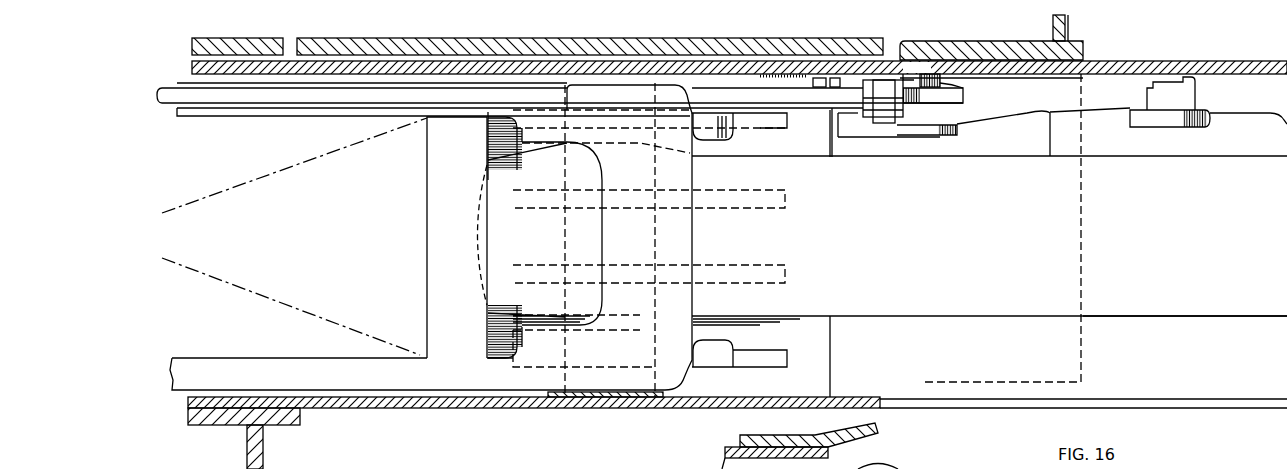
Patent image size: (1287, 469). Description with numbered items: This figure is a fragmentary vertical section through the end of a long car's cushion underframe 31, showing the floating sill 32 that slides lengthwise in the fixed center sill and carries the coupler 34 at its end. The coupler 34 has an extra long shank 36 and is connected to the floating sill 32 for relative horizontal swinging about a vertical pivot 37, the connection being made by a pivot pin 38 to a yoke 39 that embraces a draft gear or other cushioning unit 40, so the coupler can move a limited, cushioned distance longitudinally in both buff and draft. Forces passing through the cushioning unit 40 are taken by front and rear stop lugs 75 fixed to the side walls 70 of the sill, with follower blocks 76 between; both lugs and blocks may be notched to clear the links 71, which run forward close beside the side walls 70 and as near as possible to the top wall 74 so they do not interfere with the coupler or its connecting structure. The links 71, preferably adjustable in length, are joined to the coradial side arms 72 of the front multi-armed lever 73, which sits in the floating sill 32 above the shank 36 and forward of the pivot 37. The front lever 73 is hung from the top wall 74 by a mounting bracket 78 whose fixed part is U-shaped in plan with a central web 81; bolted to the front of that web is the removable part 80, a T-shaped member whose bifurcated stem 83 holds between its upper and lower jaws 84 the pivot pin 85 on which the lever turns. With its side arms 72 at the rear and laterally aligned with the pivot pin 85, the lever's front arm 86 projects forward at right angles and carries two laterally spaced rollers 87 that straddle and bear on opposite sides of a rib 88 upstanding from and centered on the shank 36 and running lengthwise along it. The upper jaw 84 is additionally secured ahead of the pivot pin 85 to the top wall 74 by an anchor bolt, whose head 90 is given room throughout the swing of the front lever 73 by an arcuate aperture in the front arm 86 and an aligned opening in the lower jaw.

The cushion underframe 31 is at (433, 416).
The floating sill 32 is at (192, 68).
The coupler 34 is at (1232, 325).
The shank 36 is at (1136, 318).
The vertical pivot 37 is at (654, 229).
The pivot pin 38 is at (654, 247).
The yoke 39 is at (276, 117).
The cushioning unit 40 is at (209, 196).
The side walls 70 is at (760, 452).
The links 71 is at (160, 103).
The side arms 72 is at (903, 107).
The front multi-armed lever 73 is at (1031, 128).
The top wall 74 is at (1000, 79).
The stop lugs 75 is at (488, 146).
The follower blocks 76 is at (437, 244).
The mounting bracket 78 is at (825, 130).
The removable part 80 is at (868, 138).
The central web 81 is at (808, 80).
The slot 83 is at (841, 124).
The jaws 84 is at (957, 130).
The pivot pin 85 is at (872, 97).
The front arm 86 is at (1037, 99).
The rollers 87 is at (1212, 122).
The rib 88 is at (1250, 112).
The head 90 is at (913, 70).